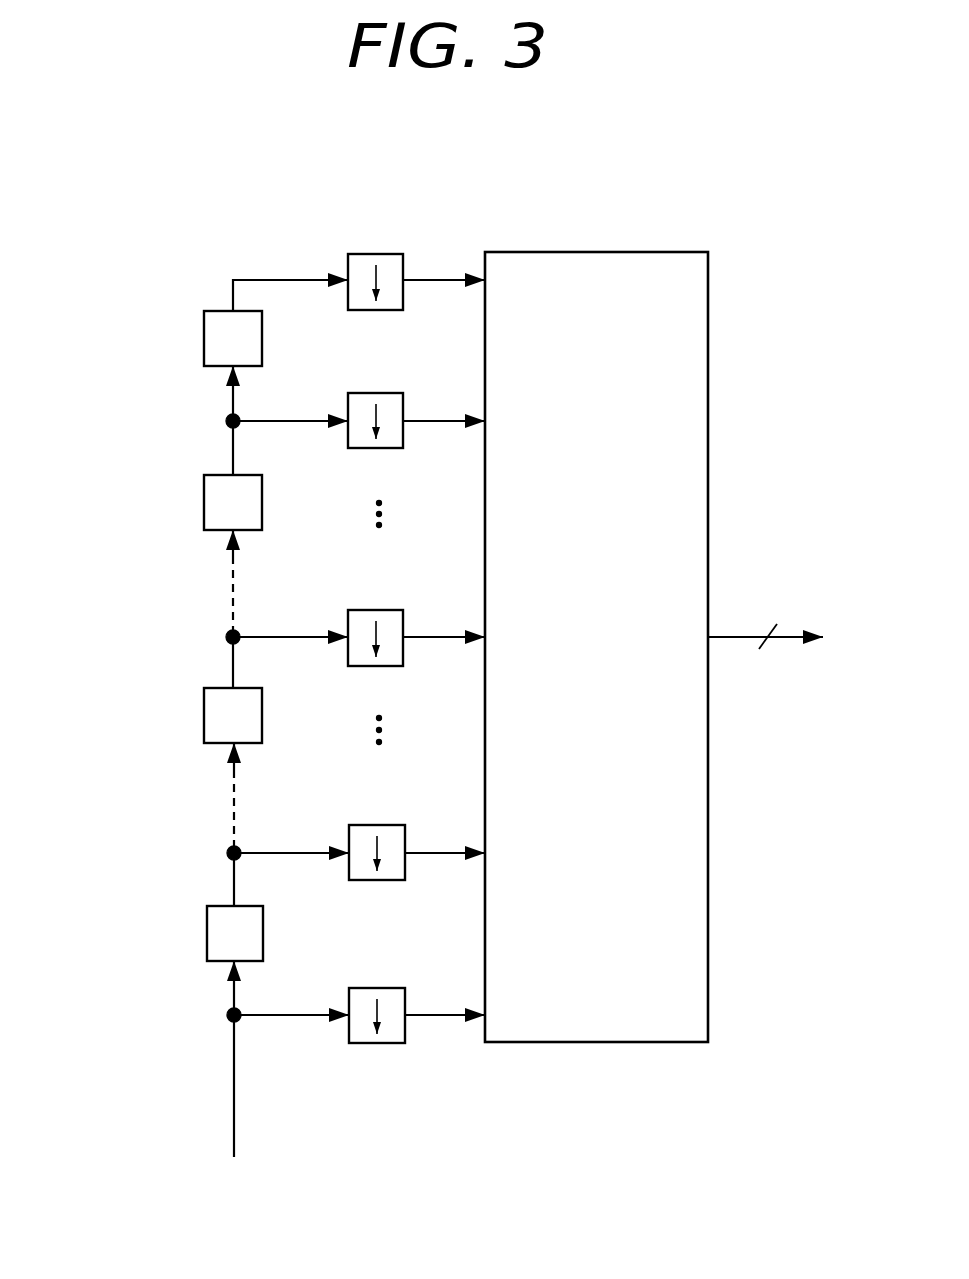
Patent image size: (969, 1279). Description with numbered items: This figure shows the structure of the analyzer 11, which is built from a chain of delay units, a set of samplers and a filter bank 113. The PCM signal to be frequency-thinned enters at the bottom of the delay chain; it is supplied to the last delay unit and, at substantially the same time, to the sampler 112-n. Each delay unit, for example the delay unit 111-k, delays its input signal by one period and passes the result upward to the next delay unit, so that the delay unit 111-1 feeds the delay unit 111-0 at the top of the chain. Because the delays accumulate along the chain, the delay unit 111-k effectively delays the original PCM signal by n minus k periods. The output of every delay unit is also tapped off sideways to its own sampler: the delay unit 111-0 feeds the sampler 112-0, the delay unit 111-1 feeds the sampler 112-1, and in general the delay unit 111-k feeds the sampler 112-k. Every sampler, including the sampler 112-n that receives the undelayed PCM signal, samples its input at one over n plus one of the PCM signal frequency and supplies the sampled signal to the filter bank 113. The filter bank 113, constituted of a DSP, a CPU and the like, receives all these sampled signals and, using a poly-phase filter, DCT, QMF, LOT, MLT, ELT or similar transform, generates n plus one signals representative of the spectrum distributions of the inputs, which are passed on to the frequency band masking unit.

The analyzer 11 is at (597, 203).
The delay unit 111-0 is at (204, 336).
The delay unit 111-1 is at (204, 498).
The delay unit 111-k is at (204, 713).
The sampler 112-0 is at (420, 224).
The sampler 112-1 is at (367, 448).
The sampler 112-k is at (388, 610).
The sampler 112-n is at (378, 1043).
The filter bank 113 is at (708, 357).